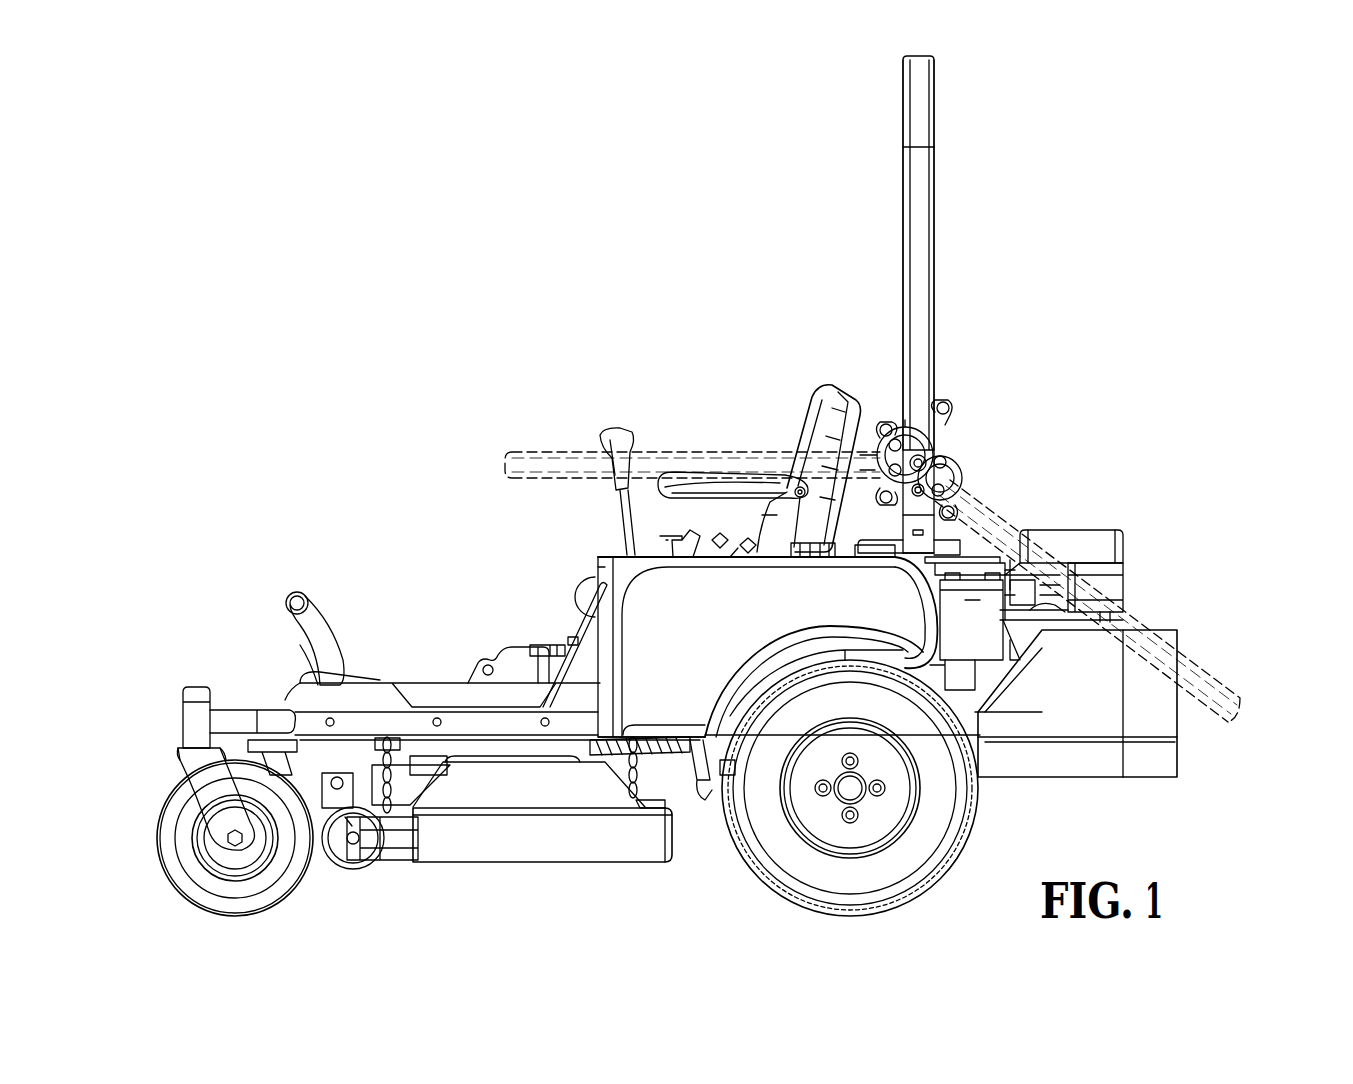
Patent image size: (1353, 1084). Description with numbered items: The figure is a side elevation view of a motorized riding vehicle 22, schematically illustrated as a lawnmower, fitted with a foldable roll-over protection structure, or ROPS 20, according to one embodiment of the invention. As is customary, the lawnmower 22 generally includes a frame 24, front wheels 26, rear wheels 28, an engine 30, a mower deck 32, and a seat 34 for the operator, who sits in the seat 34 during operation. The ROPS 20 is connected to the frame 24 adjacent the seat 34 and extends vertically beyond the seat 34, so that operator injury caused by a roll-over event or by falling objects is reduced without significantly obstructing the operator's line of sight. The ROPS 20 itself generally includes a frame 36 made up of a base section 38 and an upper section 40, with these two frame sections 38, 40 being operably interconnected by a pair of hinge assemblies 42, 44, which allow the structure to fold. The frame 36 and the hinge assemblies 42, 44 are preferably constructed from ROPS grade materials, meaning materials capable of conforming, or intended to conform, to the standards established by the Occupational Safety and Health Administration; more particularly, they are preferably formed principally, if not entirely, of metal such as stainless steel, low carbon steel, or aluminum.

The foldable ROPS 20 is at (1074, 280).
The motorized vehicle 22 is at (288, 517).
The frame 24 is at (1083, 777).
The front wheels 26 is at (166, 857).
The rear wheels 28 is at (974, 830).
The engine 30 is at (1107, 558).
The mower deck 32 is at (549, 863).
The seat 34 is at (815, 392).
The frame 36 is at (935, 335).
The base section 38 is at (947, 540).
The upper section 40 is at (903, 246).
The hinge assembly 42 is at (975, 438).
The hinge assembly 44 is at (919, 463).